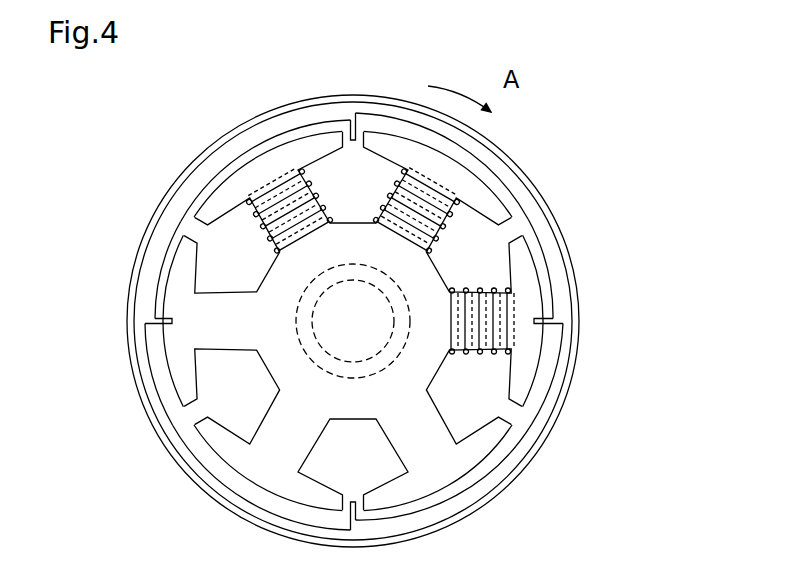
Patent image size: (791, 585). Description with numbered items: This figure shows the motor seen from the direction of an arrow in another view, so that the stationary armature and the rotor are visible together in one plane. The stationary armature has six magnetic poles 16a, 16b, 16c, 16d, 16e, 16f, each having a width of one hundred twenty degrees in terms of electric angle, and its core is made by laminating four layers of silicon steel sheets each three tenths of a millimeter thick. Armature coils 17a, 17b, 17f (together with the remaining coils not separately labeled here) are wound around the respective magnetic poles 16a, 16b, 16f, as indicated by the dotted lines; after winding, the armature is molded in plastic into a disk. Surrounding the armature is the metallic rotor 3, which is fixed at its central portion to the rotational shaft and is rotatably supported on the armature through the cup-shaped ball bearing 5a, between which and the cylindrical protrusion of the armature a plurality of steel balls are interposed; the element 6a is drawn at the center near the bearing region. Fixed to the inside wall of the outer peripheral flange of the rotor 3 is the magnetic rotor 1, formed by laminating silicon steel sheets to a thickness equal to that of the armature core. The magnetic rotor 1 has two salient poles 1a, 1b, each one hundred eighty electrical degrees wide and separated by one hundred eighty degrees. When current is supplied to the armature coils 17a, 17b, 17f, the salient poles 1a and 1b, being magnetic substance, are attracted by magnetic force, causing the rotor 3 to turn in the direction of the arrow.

The magnetic rotor 1 is at (437, 532).
The salient pole 1a is at (218, 194).
The salient pole 1b is at (493, 433).
The rotor 3 is at (572, 266).
The ball bearing 5a is at (310, 363).
The shaft 6a is at (367, 362).
The magnetic pole 16a is at (472, 166).
The magnetic pole 16b is at (551, 309).
The magnetic pole 16c is at (497, 475).
The magnetic pole 16d is at (251, 481).
The magnetic pole 16e is at (162, 337).
The magnetic pole 16f is at (237, 162).
The armature coil 17a is at (438, 238).
The armature coil 17b is at (467, 353).
The armature coil 17f is at (320, 197).